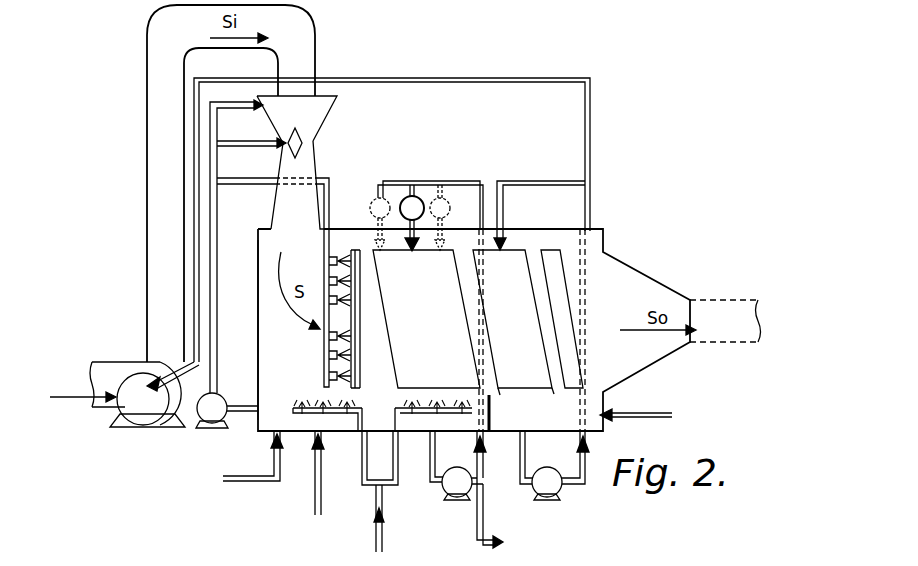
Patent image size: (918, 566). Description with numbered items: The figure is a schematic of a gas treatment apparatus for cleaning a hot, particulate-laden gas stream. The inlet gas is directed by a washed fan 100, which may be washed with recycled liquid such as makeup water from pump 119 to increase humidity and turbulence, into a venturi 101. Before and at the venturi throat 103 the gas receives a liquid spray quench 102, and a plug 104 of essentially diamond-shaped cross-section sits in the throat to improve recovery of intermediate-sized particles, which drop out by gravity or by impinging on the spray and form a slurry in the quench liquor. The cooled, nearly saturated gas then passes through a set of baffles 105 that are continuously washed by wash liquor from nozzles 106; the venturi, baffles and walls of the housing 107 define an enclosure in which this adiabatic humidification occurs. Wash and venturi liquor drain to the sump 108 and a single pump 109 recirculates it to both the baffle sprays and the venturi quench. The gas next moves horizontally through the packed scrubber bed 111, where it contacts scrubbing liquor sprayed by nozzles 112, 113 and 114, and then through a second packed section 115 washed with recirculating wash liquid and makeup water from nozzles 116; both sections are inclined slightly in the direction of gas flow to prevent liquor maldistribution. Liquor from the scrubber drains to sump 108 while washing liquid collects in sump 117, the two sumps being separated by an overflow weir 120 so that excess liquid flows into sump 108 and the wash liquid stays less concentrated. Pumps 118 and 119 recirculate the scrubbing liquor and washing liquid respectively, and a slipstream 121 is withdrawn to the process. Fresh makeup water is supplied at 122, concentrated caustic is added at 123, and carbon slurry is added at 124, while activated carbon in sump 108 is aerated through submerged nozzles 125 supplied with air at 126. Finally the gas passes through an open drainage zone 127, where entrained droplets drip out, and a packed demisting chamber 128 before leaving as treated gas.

The washed fan 100 is at (150, 362).
The venturi 101 is at (334, 114).
The liquid spray quench 102 is at (235, 100).
The venturi throat 103 is at (316, 141).
The plug 104 is at (295, 128).
The baffles 105 is at (362, 293).
The nozzles 106 is at (337, 377).
The housing 107 is at (250, 266).
The sump 108 is at (273, 417).
The pump 109 is at (205, 421).
The scrubber bed 111 is at (434, 331).
The nozzle 112 is at (377, 193).
The nozzle 113 is at (410, 196).
The nozzle 114 is at (438, 197).
The second packed section 115 is at (522, 331).
The nozzles 116 is at (497, 203).
The collection sump 117 is at (502, 425).
The pump 118 is at (455, 500).
The pump 119 is at (539, 465).
The overflow weir 120 is at (491, 428).
The slipstream 121 is at (484, 510).
The makeup water supply 122 is at (632, 412).
The caustic addition 123 is at (253, 482).
The carbon slurry addition 124 is at (320, 496).
The submerged nozzles 125 is at (303, 419).
The air feed 126 is at (374, 501).
The open drainage zone 127 is at (558, 375).
The demisting chamber 128 is at (564, 297).